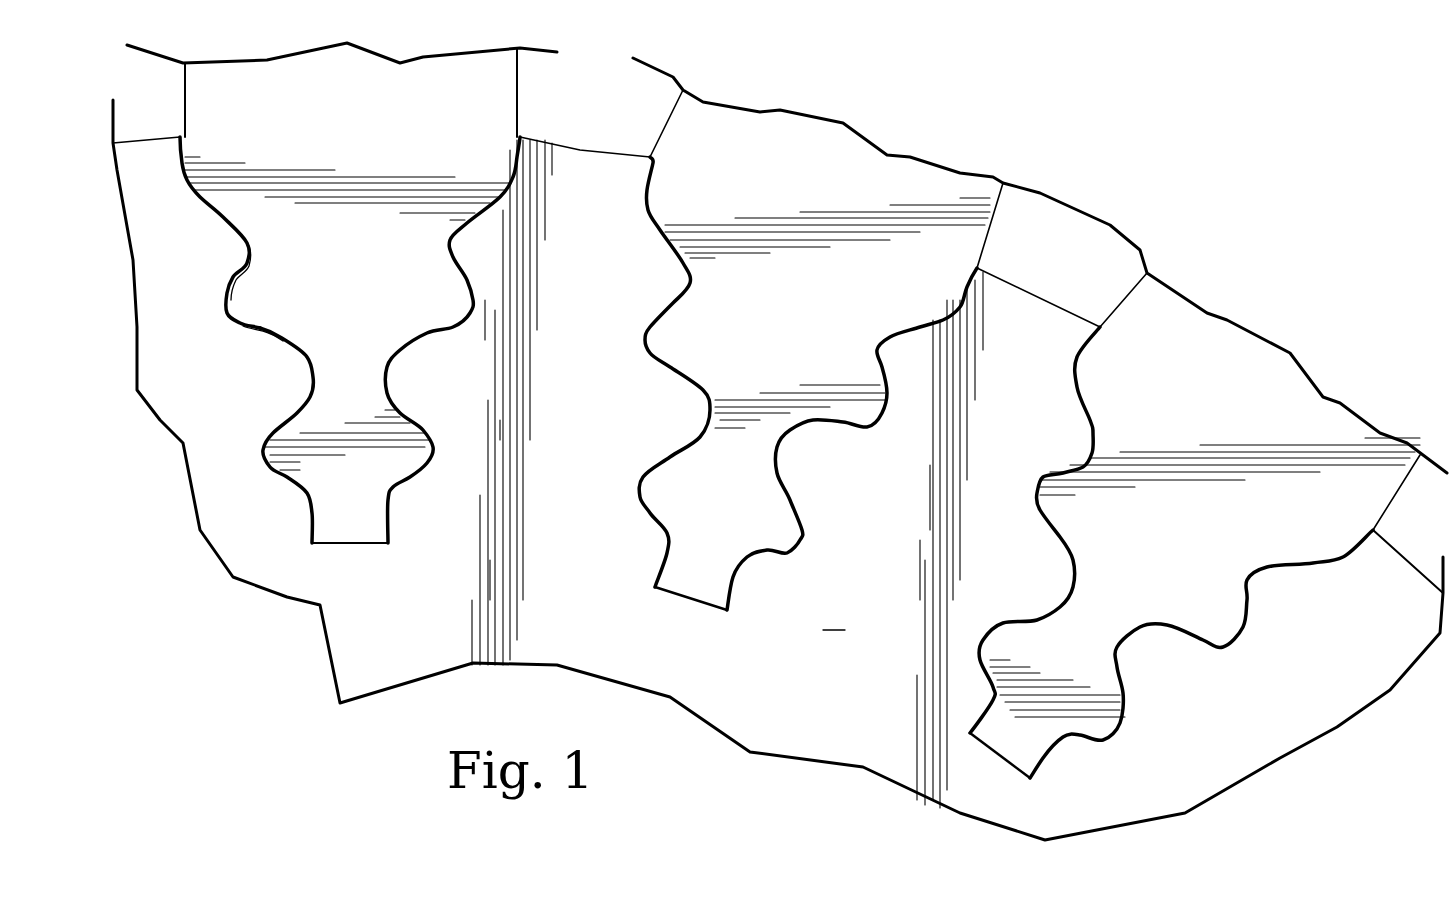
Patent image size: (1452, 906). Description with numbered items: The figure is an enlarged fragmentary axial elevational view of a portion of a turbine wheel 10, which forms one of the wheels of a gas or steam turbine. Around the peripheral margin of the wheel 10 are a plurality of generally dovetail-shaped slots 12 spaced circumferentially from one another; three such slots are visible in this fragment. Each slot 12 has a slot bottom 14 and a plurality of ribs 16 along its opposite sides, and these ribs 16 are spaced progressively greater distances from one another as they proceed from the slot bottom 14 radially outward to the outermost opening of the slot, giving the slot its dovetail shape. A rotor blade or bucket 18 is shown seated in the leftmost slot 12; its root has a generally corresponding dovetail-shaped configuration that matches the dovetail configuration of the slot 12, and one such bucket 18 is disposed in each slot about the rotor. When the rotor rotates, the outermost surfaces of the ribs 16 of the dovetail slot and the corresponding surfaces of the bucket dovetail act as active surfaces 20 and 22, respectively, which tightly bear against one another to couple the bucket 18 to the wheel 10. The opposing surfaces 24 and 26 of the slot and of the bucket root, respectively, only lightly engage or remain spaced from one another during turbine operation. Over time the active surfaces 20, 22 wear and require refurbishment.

The wheel 10 is at (780, 449).
The dovetail-shaped slot 12 is at (1037, 487).
The slot bottom 14 is at (340, 543).
The ribs 16 is at (393, 363).
The rotor blade or bucket 18 is at (492, 92).
The active surface of slot rib 20 is at (243, 280).
The active surface of bucket dovetail 22 is at (237, 278).
The opposing surface of slot 24 is at (270, 333).
The opposing surface of bucket root 26 is at (278, 337).